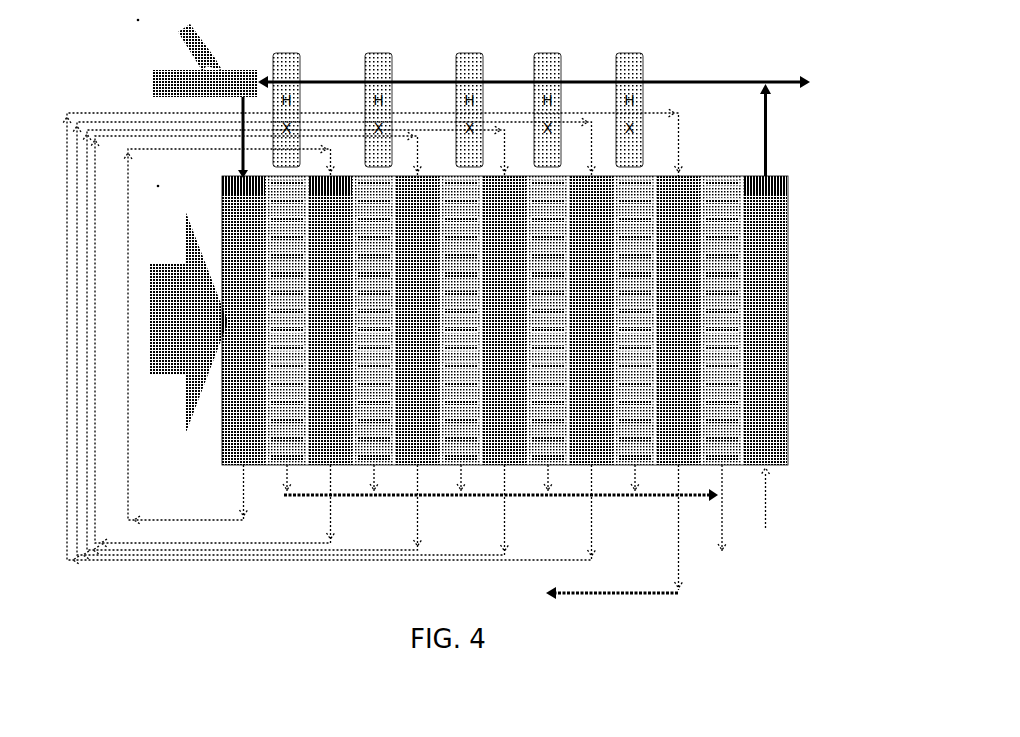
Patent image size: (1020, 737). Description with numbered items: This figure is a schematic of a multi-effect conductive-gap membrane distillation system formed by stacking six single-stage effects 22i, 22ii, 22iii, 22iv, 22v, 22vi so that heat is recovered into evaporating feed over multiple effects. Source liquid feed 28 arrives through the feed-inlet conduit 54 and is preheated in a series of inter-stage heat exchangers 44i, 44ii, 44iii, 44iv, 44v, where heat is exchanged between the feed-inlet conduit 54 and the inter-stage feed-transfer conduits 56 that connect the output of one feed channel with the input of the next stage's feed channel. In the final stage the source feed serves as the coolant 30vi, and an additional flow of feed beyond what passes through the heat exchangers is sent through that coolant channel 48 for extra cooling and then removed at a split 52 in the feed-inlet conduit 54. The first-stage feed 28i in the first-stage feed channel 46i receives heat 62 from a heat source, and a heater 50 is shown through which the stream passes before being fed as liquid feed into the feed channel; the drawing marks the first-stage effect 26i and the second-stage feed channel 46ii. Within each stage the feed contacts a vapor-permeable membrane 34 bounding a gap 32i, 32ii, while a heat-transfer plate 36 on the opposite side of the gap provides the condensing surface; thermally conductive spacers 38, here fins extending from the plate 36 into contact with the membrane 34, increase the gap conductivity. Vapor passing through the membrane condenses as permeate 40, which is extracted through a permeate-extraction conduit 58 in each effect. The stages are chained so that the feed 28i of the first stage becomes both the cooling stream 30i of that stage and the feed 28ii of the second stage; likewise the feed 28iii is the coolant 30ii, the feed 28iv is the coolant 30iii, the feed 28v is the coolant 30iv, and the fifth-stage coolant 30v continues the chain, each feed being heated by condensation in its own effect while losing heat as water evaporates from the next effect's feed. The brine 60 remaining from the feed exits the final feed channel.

The first CGMD effect 22i is at (229, 480).
The second CGMD effect 22ii is at (336, 481).
The third CGMD effect 22iii is at (419, 481).
The fourth CGMD effect 22iv is at (506, 483).
The fifth CGMD effect 22v is at (599, 481).
The sixth CGMD effect 22vi is at (681, 482).
The first-stage effect 26i is at (243, 320).
The liquid feed 28 is at (767, 495).
The first-stage feed 28i is at (330, 320).
The second-stage feed 28ii is at (417, 320).
The third-stage feed 28iii is at (504, 320).
The fourth-stage feed 28iv is at (591, 320).
The fifth-stage feed 28v is at (678, 320).
The first-stage cooling stream 30i is at (330, 320).
The second-stage cooling stream 30ii is at (417, 320).
The third-stage cooling stream 30iii is at (504, 320).
The fourth-stage cooling stream 30iv is at (591, 320).
The fifth-stage cooling stream 30v is at (678, 320).
The sixth-stage coolant 30vi is at (765, 320).
The first-stage gap 32i is at (292, 458).
The second-stage gap 32ii is at (367, 448).
The vapor-permeable membrane 34 is at (268, 375).
The heat-transfer plate 36 is at (300, 262).
The thermally conductive spacers 38 is at (290, 432).
The condensed permeate liquid 40 is at (285, 482).
The first inter-stage heat exchanger 44i is at (287, 68).
The second inter-stage heat exchanger 44ii is at (377, 68).
The third inter-stage heat exchanger 44iii is at (465, 68).
The fourth inter-stage heat exchanger 44iv is at (547, 68).
The fifth inter-stage heat exchanger 44v is at (630, 68).
The first-stage feed channel 46i is at (232, 192).
The second-stage feed channel 46ii is at (328, 185).
The coolant channel 48 is at (755, 185).
The heater 50 is at (205, 124).
The split 52 is at (756, 76).
The feed-inlet conduit 54 is at (672, 82).
The inter-stage feed-transfer conduits 56 is at (96, 271).
The permeate-extraction conduit 58 is at (347, 497).
The brine 60 is at (678, 558).
The heat 62 is at (165, 330).